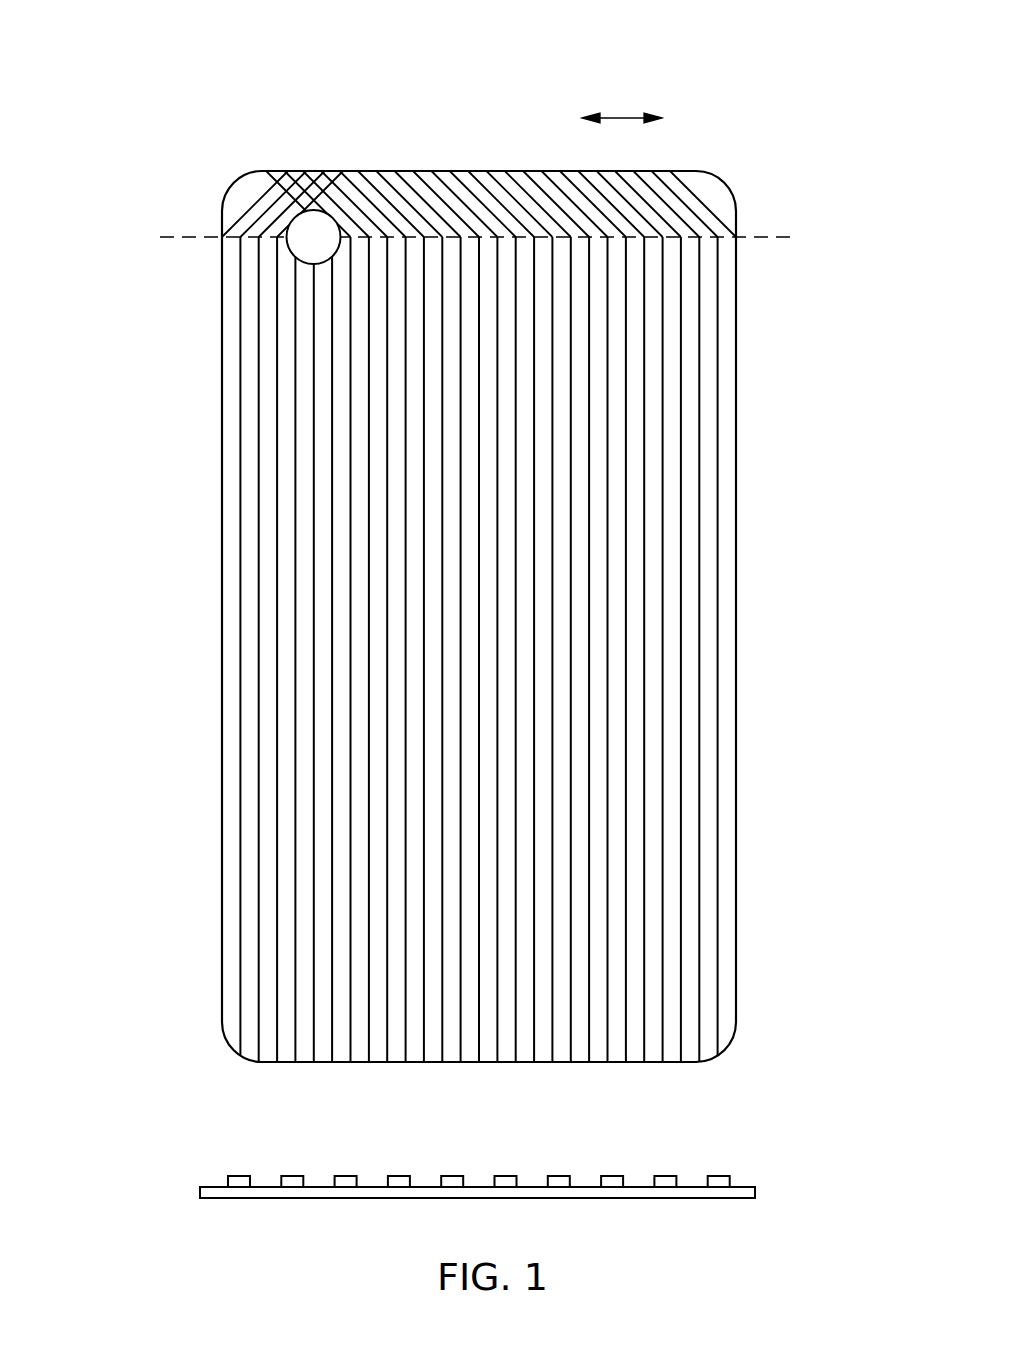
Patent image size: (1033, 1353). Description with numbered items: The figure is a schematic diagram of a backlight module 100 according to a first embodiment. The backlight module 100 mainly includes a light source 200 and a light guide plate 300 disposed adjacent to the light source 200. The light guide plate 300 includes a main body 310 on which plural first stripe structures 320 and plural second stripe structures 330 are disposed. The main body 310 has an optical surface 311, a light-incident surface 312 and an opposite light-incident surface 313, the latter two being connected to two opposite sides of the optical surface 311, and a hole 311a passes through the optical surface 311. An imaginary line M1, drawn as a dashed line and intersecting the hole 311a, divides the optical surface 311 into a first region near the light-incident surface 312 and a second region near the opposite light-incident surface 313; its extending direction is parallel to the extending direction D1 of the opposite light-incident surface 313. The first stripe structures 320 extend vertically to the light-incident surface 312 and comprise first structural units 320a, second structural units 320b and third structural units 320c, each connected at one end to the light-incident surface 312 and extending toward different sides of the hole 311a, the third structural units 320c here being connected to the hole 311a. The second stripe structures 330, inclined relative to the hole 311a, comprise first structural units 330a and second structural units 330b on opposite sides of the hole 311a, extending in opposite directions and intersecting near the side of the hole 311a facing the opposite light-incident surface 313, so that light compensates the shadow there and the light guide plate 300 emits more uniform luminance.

The backlight module 100 is at (107, 43).
The light source 200 is at (750, 1192).
The light guide plate 300 is at (195, 135).
The main body 310 is at (461, 583).
The optical surface 311 is at (675, 845).
The hole 311a is at (292, 255).
The light-incident surface 312 is at (672, 1062).
The opposite light-incident surface 313 is at (465, 171).
The first stripe structures 320 is at (483, 676).
The first structural units 320a is at (277, 1065).
The second structural units 320b is at (593, 676).
The third structural units 320c is at (332, 1065).
The second stripe structures 330 is at (479, 135).
The first structural units 330a is at (268, 212).
The second structural units 330b is at (357, 212).
The imaginary line M1 is at (758, 236).
The extending direction D1 is at (622, 103).